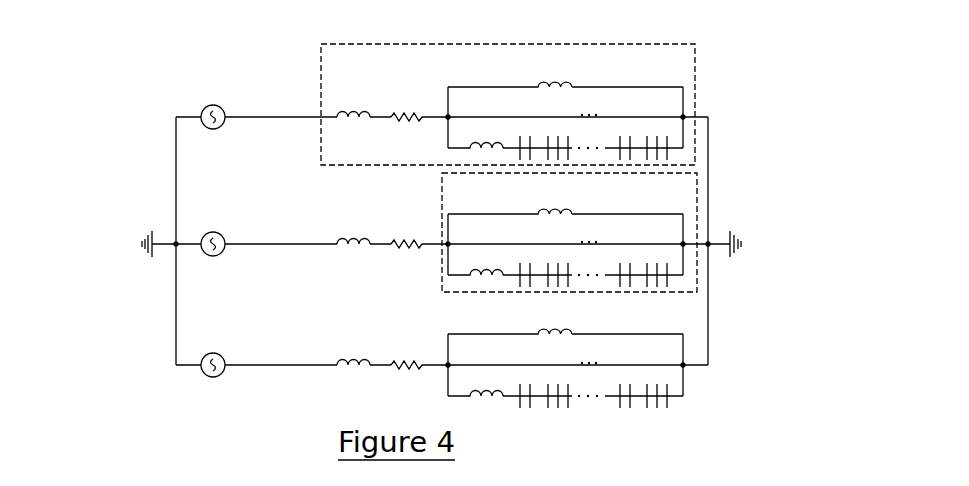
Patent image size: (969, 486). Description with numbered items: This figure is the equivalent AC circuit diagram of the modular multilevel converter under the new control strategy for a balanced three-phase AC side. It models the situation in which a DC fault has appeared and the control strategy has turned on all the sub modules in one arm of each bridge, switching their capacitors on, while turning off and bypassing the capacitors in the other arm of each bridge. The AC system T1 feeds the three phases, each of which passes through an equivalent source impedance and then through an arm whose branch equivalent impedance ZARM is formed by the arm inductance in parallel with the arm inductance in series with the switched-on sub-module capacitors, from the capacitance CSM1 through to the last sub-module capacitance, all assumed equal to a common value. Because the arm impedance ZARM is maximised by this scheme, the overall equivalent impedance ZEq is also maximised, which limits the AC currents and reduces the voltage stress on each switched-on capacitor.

The AC system T1 is at (94, 227).
The sub-module capacitance CSM1 is at (537, 131).
The equivalent impedance ZEq is at (530, 104).
The branch equivalent impedance ZARM is at (612, 232).